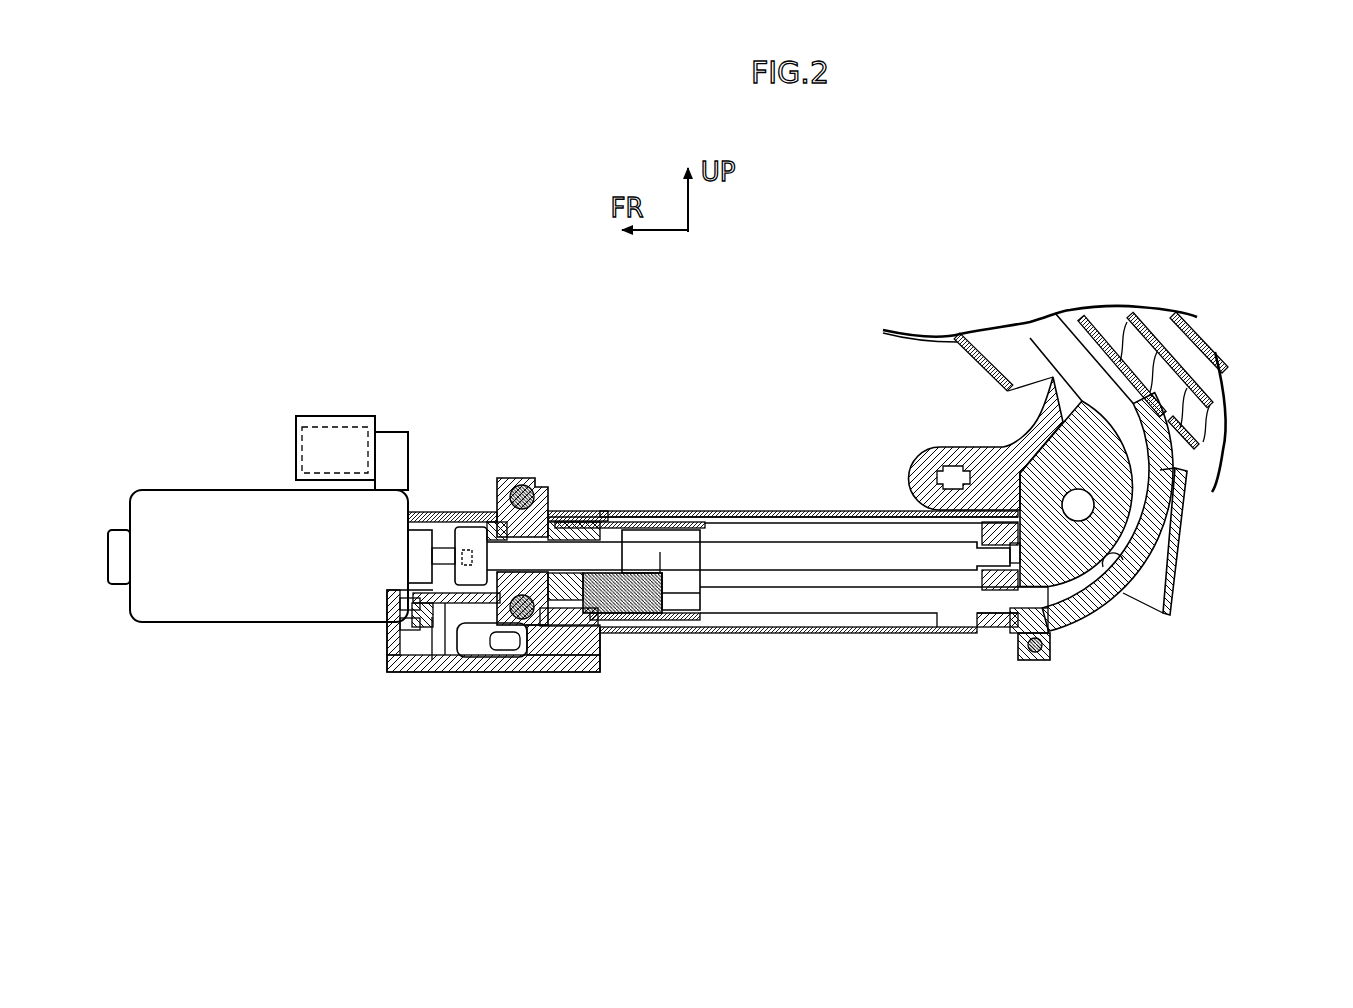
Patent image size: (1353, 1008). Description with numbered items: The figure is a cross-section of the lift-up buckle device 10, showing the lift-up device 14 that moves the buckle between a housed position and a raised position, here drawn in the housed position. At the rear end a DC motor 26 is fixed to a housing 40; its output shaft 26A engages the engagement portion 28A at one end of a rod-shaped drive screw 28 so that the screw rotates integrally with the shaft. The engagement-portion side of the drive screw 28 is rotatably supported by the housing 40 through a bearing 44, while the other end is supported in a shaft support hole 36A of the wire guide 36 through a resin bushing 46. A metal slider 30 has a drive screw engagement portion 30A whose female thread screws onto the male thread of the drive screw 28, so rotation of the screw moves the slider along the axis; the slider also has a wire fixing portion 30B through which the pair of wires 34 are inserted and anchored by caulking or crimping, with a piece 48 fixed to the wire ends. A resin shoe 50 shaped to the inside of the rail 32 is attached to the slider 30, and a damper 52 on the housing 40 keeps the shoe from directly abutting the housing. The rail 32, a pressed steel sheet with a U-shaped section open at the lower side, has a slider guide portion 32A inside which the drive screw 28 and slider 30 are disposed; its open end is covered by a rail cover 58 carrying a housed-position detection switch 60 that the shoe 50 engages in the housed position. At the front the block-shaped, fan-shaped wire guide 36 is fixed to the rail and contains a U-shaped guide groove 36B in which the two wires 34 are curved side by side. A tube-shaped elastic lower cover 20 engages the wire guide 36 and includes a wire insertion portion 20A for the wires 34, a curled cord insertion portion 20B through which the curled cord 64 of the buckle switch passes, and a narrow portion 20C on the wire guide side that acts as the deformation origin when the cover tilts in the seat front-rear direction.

The lift-up buckle device 10 is at (526, 306).
The lift-up device 14 is at (862, 766).
The lower cover 20 is at (1090, 382).
The wire insertion portion 20A is at (995, 380).
The curled cord insertion portion 20B is at (1213, 340).
The narrow portion 20C is at (1040, 395).
The motor 26 is at (180, 483).
The output shaft 26A is at (440, 530).
The drive screw 28 is at (773, 531).
The engagement portion 28A is at (466, 532).
The slider 30 is at (680, 489).
The drive screw engagement portion 30A is at (678, 540).
The wire fixing portion 30B is at (717, 578).
The rail 32 is at (783, 451).
The slider guide portion 32A is at (860, 508).
The wires 34 is at (797, 616).
The wire guide 36 is at (1137, 523).
The shaft support hole 36A is at (1050, 663).
The guide groove 36B is at (1177, 590).
The housing 40 is at (519, 490).
The bearing 44 is at (490, 510).
The bushing 46 is at (978, 576).
The piece 48 is at (633, 615).
The shoe 50 is at (708, 622).
The damper 52 is at (550, 497).
The rail cover 58 is at (750, 634).
The housed-position detection switch 60 is at (532, 667).
The curled cord 64 is at (1226, 372).